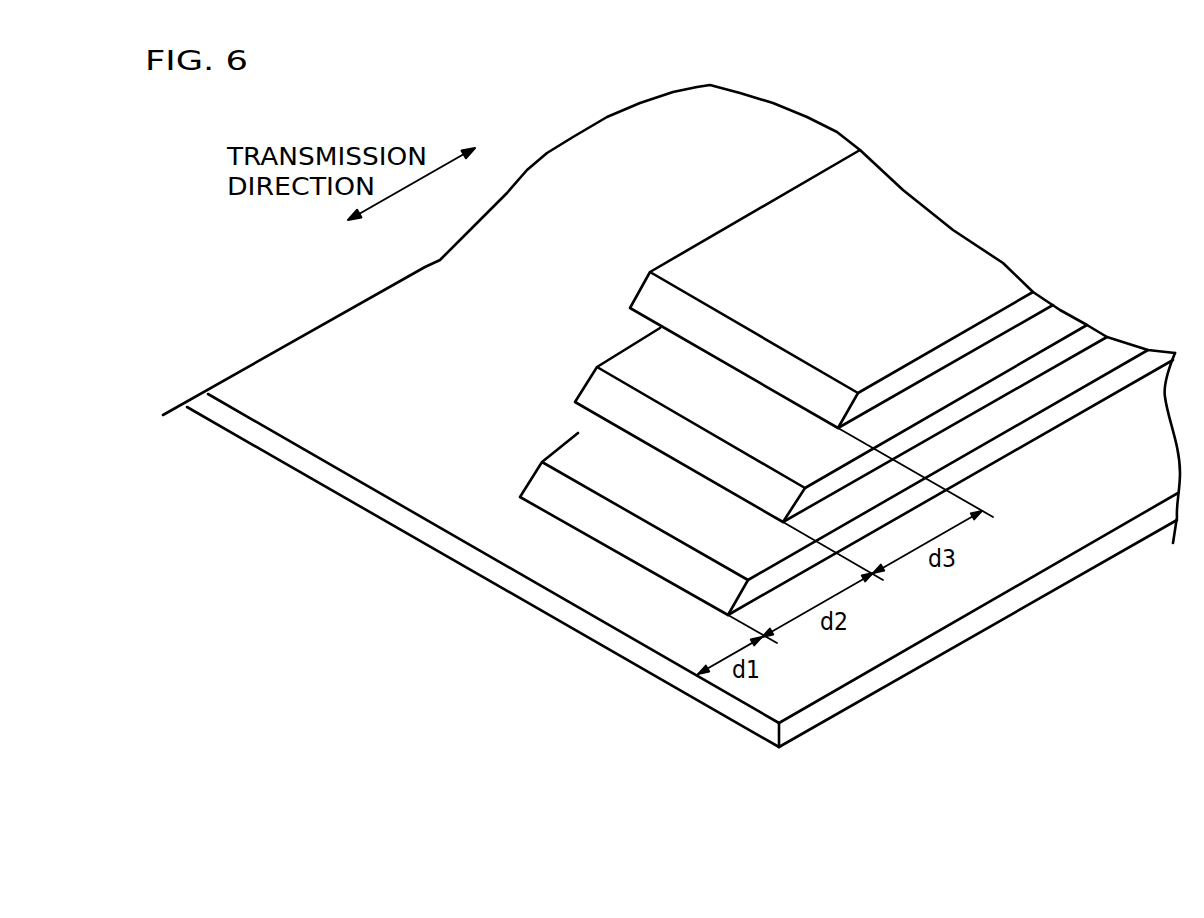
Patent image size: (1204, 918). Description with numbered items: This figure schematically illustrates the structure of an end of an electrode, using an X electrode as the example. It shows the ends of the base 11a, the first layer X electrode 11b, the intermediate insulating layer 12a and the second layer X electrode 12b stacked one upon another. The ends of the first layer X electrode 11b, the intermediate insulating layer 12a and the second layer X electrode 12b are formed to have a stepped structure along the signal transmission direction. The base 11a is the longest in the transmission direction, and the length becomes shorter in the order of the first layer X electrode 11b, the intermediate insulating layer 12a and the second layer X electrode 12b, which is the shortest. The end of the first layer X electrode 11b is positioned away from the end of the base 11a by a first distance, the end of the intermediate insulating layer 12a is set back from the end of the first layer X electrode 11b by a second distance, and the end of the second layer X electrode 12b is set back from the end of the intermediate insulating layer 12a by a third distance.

The base 11a is at (318, 498).
The first layer X electrode 11b is at (667, 565).
The intermediate insulating layer 12a is at (603, 347).
The second layer X electrode 12b is at (688, 236).